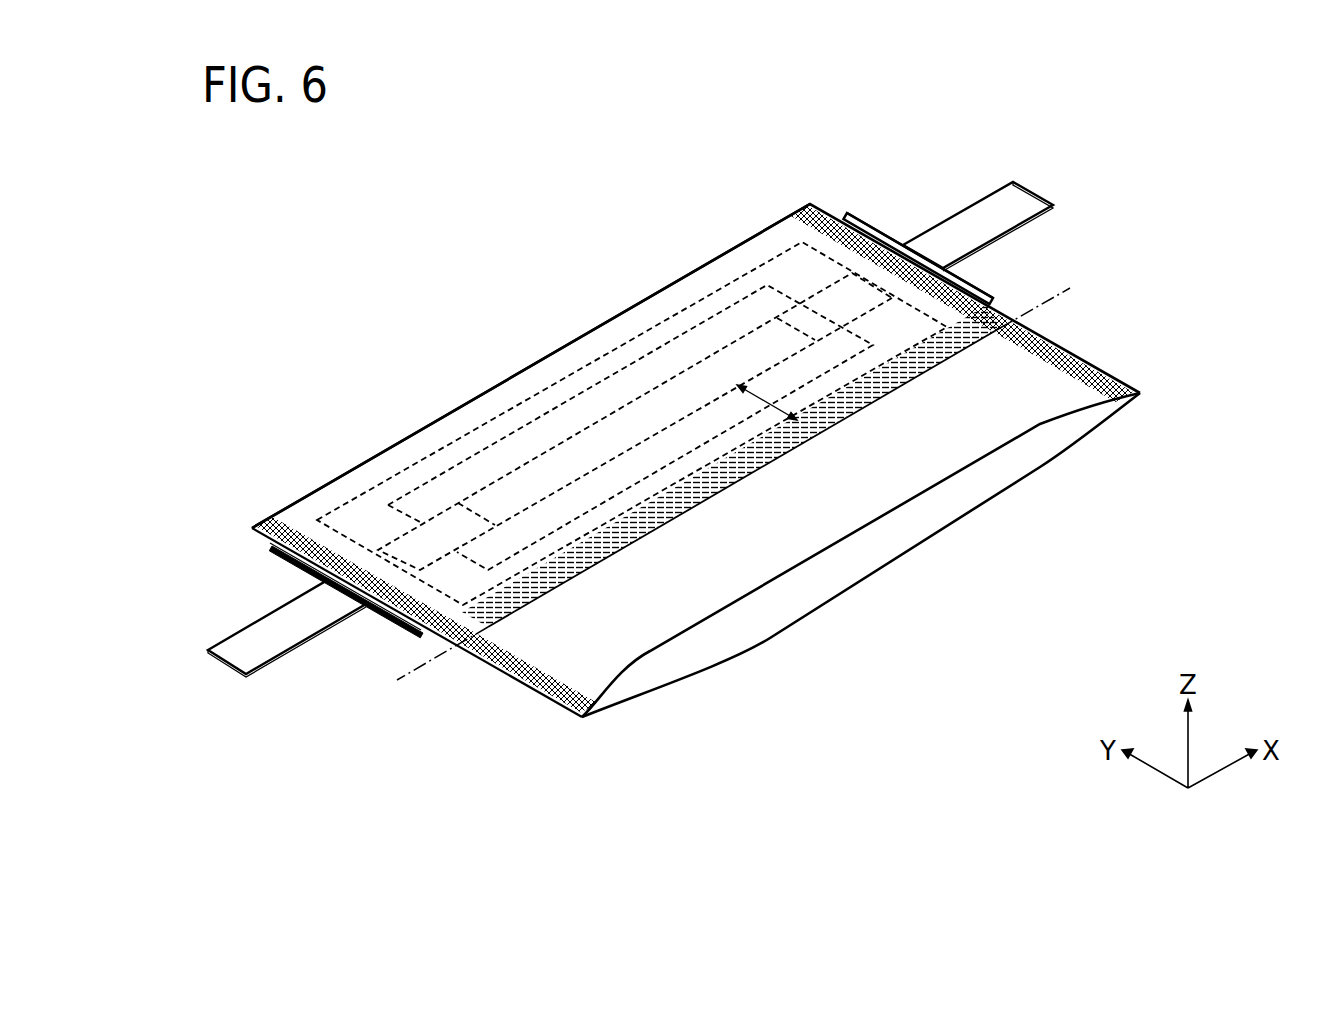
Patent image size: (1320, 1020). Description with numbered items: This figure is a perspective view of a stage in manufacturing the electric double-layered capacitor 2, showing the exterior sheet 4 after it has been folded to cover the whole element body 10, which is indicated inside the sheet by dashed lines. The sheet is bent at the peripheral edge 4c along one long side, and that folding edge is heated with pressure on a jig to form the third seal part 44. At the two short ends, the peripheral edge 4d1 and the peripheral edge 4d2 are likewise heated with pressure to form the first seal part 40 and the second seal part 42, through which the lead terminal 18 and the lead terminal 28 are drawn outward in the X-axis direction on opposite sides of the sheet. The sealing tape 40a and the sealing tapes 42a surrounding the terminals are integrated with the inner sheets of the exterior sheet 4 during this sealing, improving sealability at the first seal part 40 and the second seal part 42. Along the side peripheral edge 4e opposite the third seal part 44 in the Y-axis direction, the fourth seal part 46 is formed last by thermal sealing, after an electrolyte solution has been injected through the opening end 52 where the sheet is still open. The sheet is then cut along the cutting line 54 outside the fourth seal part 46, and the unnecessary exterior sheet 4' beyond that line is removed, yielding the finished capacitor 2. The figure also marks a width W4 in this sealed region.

The electric double-layered capacitor 2 is at (632, 293).
The exterior sheet 4 is at (696, 444).
The unnecessary exterior sheet 4' is at (1090, 350).
The peripheral edge 4c is at (380, 447).
The peripheral edge 4d1 is at (270, 542).
The peripheral edge 4d2 is at (1017, 300).
The side peripheral edge 4e is at (677, 520).
The element body 10 is at (617, 404).
The lead terminal 18 is at (263, 650).
The lead terminal 28 is at (990, 218).
The first seal part 40 is at (397, 603).
The sealing tape 40a is at (290, 565).
The second seal part 42 is at (822, 205).
The sealing tape 42a is at (878, 225).
The third seal part 44 is at (488, 415).
The fourth seal part 46 is at (527, 595).
The opening end 52 is at (1025, 453).
The cutting line 54 is at (1070, 288).
The width W4 is at (762, 402).